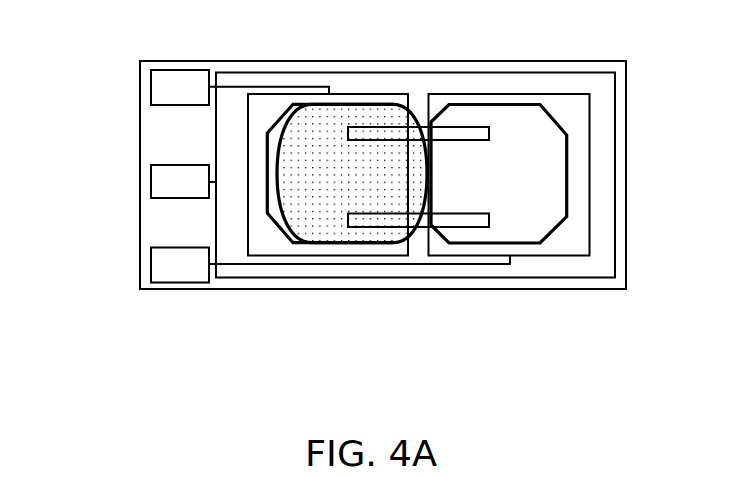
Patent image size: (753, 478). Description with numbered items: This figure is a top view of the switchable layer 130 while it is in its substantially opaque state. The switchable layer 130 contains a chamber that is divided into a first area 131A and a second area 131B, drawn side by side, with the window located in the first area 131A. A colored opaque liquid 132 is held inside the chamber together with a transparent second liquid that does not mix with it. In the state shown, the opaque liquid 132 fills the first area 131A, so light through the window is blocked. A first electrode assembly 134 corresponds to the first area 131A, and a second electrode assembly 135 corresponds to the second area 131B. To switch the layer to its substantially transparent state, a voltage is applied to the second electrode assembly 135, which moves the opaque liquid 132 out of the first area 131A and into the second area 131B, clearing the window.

The switchable layer 130 is at (92, 35).
The first area 131A is at (284, 236).
The second area 131B is at (555, 229).
The opaque liquid 132 is at (307, 132).
The first electrode assembly 134 is at (178, 70).
The second electrode assembly 135 is at (180, 283).